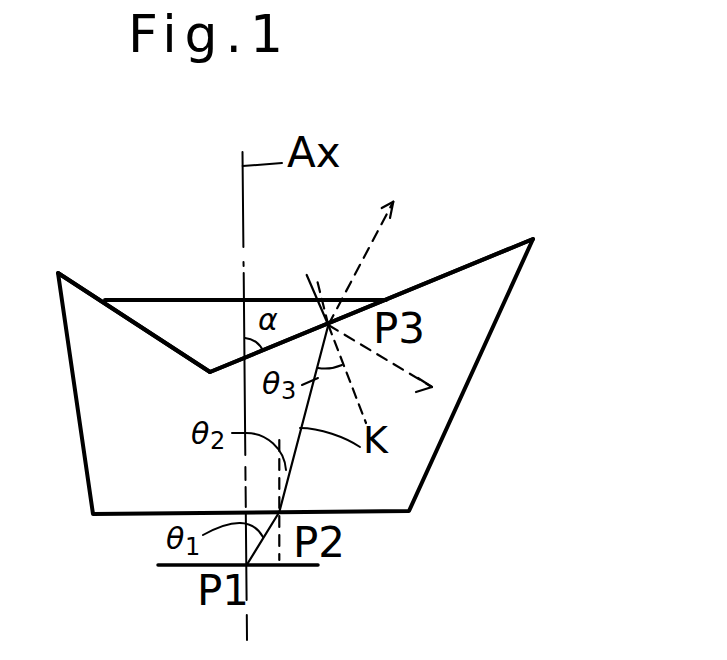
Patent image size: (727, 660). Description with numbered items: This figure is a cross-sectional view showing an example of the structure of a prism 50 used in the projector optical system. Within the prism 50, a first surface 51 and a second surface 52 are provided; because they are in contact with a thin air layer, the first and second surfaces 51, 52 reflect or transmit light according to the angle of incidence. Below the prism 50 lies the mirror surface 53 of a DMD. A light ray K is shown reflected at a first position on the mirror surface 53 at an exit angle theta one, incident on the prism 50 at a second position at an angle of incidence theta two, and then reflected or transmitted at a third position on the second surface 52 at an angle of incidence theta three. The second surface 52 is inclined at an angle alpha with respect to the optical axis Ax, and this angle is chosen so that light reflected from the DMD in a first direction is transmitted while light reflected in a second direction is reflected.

The prism 50 is at (482, 400).
The first surface 51 is at (132, 322).
The second surface 52 is at (457, 268).
The mirror surface of a DMD 53 is at (355, 561).